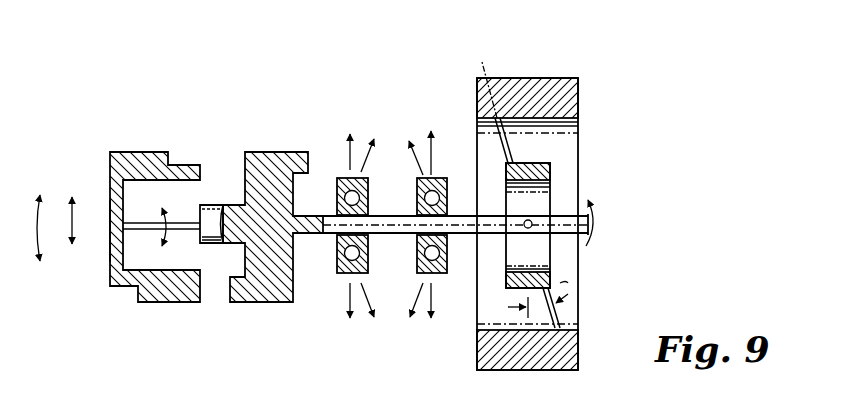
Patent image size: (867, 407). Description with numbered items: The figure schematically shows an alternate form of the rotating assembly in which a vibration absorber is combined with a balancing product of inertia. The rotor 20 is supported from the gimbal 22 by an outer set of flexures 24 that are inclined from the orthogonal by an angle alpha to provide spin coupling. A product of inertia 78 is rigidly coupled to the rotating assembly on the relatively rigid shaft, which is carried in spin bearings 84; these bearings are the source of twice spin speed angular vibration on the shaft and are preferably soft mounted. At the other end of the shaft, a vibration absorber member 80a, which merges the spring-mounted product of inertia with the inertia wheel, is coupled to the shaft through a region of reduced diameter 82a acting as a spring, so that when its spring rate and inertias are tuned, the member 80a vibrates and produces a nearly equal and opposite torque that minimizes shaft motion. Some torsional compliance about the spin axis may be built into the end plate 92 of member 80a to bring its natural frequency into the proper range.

The rotor 20 is at (562, 78).
The gimbal 22 is at (550, 172).
The outer set of flexures 24 is at (512, 143).
The product of inertia 78 is at (277, 152).
The vibration absorber member 80a is at (153, 152).
The region of reduced diameter 82a is at (147, 223).
The spin bearings 84 is at (342, 177).
The end plate 92 is at (110, 261).